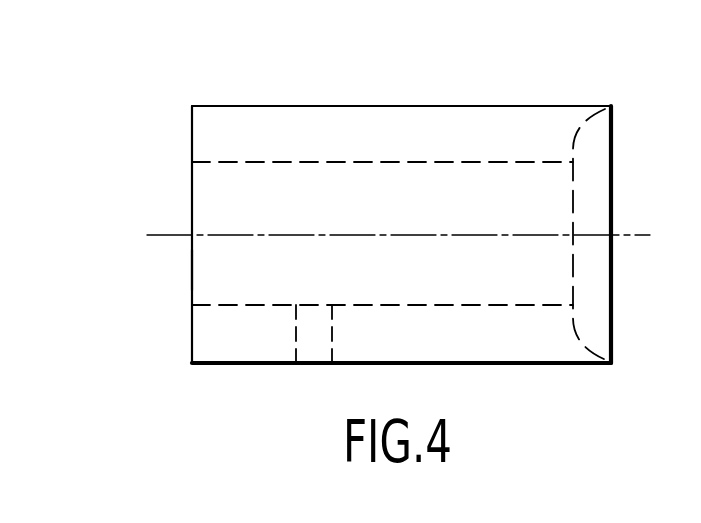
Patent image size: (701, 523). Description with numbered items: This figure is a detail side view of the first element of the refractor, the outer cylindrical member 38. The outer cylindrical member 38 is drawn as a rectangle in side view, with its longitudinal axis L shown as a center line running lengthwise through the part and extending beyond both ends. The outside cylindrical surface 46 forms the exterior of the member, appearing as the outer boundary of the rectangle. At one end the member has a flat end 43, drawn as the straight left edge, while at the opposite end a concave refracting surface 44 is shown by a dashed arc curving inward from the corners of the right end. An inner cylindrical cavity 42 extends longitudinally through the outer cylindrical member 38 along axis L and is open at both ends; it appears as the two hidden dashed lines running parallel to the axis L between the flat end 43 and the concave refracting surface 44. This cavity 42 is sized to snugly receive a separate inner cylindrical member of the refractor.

The outer cylindrical member 38 is at (322, 106).
The inner cylindrical cavity 42 is at (225, 162).
The flat end 43 is at (192, 270).
The concave refracting surface 44 is at (593, 146).
The outside cylindrical surface 46 is at (467, 363).
The longitudinal axis L is at (633, 236).